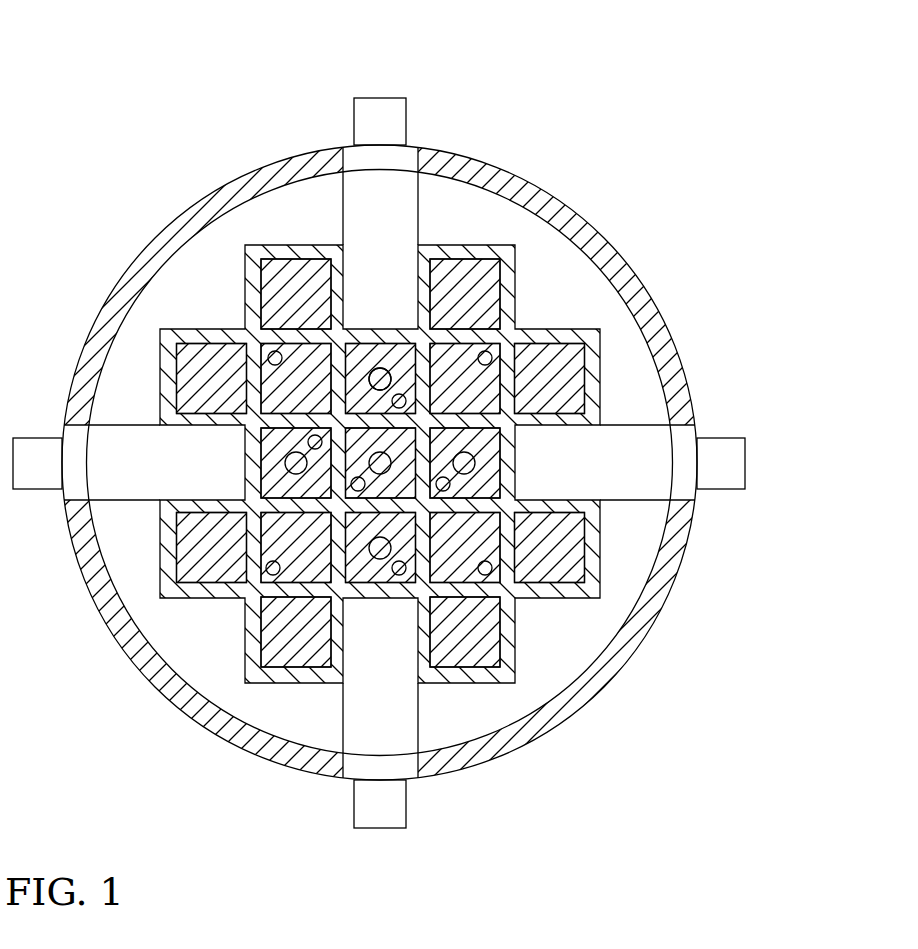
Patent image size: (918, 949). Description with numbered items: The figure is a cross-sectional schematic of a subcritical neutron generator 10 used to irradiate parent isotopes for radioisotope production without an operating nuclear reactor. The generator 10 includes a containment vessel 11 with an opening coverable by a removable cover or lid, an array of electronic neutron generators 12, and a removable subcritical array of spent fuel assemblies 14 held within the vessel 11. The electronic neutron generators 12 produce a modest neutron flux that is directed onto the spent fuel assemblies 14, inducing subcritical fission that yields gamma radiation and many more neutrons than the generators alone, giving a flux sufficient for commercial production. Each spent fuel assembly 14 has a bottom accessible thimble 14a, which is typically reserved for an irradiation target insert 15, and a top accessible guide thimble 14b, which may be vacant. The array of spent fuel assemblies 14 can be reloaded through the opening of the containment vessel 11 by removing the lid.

The subcritical neutron generator 10 is at (118, 80).
The containment vessel 11 is at (638, 267).
The electronic neutron generator 12 is at (747, 474).
The spent fuel assembly 14 is at (400, 357).
The bottom accessible thimble 14a is at (478, 458).
The top accessible guide thimble 14b is at (275, 357).
The irradiation target insert 15 is at (375, 363).